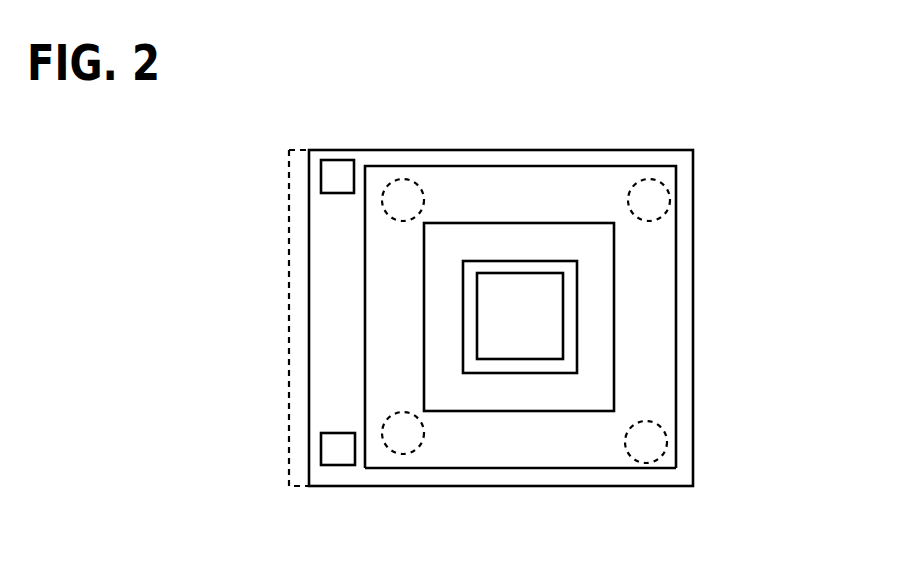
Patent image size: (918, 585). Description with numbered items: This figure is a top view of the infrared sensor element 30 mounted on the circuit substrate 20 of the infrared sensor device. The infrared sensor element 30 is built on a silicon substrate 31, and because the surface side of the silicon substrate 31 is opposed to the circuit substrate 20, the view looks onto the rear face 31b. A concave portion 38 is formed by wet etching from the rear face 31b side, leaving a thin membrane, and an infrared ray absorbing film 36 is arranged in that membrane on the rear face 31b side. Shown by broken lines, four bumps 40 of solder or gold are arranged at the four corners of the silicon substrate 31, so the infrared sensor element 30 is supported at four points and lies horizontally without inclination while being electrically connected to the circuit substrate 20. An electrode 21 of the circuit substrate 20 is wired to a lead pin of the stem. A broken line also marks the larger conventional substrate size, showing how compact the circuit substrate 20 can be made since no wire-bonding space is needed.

The circuit substrate 20 is at (289, 228).
The electrode 21 is at (335, 170).
The infrared sensor element 30 is at (521, 353).
The silicon substrate 31 is at (600, 452).
The rear face 31b is at (520, 452).
The infrared ray absorbing film 36 is at (545, 323).
The concave portion 38 is at (599, 267).
The bump 40 is at (405, 192).